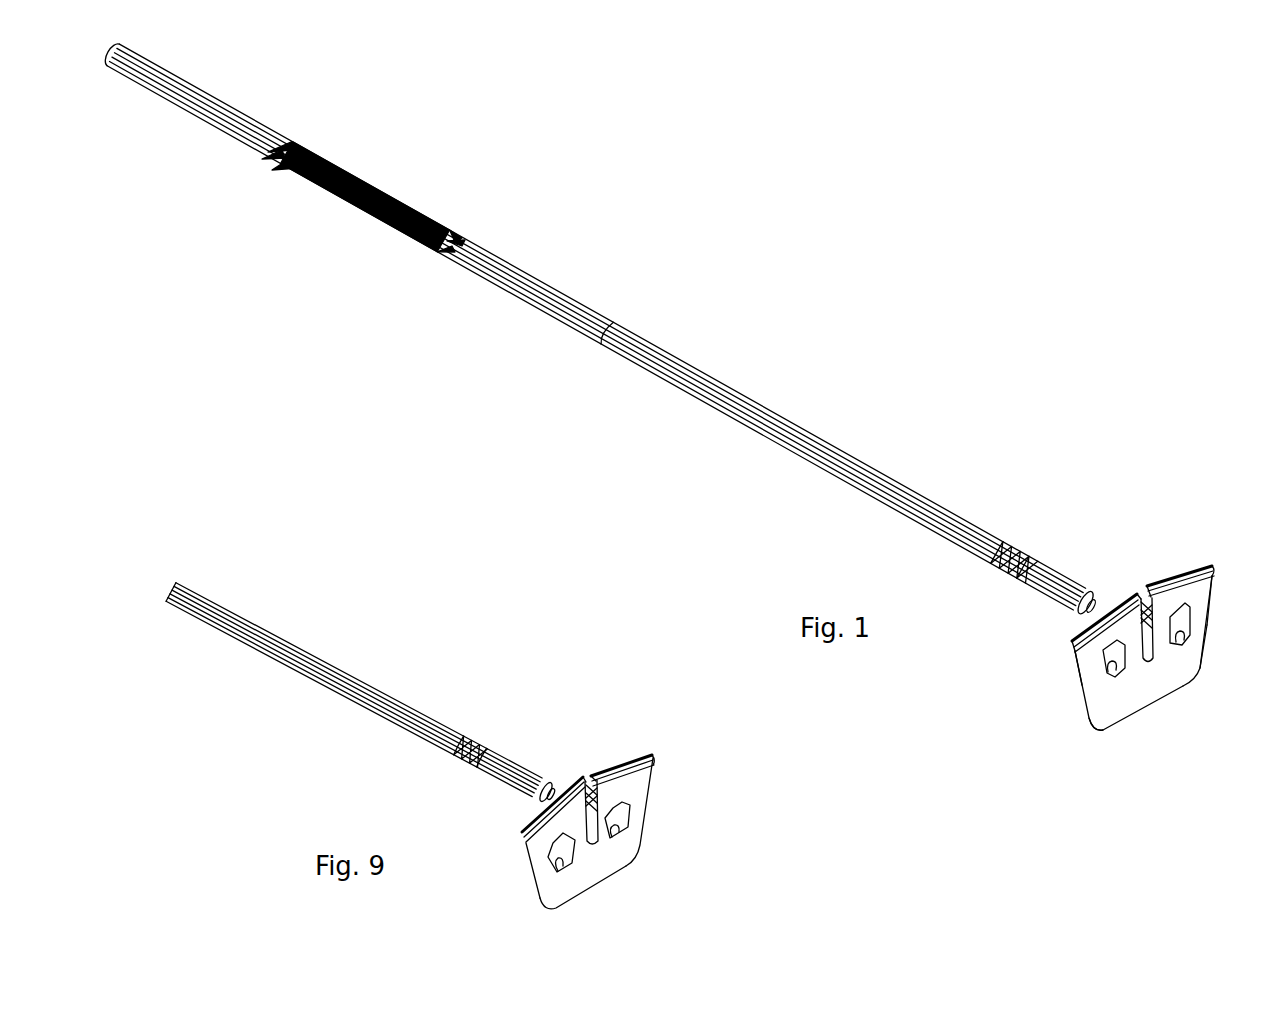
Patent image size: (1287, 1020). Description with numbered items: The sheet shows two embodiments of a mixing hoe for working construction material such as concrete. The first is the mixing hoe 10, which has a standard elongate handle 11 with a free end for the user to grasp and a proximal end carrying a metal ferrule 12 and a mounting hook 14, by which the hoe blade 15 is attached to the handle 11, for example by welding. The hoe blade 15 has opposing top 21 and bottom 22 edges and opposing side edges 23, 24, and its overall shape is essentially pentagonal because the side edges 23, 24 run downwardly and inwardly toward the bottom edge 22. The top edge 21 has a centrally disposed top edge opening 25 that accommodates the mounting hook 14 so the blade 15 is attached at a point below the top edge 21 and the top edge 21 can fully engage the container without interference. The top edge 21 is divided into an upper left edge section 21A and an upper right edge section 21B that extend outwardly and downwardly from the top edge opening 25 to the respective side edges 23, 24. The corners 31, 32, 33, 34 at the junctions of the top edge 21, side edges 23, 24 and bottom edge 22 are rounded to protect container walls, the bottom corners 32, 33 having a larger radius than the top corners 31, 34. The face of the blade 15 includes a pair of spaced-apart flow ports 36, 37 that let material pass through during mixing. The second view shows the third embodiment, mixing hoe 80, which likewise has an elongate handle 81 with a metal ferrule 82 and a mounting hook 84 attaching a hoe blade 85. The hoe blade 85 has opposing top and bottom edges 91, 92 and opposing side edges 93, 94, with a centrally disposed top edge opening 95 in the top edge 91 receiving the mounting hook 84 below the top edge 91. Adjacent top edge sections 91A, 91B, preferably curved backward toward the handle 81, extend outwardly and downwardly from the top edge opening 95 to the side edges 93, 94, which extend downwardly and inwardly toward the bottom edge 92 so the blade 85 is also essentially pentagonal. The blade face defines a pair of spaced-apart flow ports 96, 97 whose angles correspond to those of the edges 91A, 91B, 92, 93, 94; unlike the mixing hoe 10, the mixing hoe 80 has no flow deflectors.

In FIG. 1, the mixing hoe 10 is at (853, 270).
In FIG. 1, the handle 11 is at (487, 240).
In FIG. 1, the metal ferrule 12 is at (1030, 556).
In FIG. 1, the mounting hook 14 is at (1103, 604).
In FIG. 1, the hoe blade 15 is at (1105, 703).
In FIG. 1, the top edge 21 is at (1208, 575).
In FIG. 1, the upper left edge section 21A is at (1078, 632).
In FIG. 1, the upper right edge section 21B is at (1180, 570).
In FIG. 1, the bottom edge 22 is at (1178, 690).
In FIG. 1, the side edge 23 is at (1078, 672).
In FIG. 1, the side edge 24 is at (1205, 628).
In FIG. 1, the top edge opening 25 is at (1144, 592).
In FIG. 1, the top corner 31 is at (1080, 640).
In FIG. 1, the bottom corner 32 is at (1097, 735).
In FIG. 1, the bottom corner 33 is at (1200, 672).
In FIG. 1, the top corner 34 is at (1218, 568).
In FIG. 1, the flow port 36 is at (1113, 674).
In FIG. 1, the flow port 37 is at (1183, 633).
In FIG. 9, the mixing hoe 80 is at (472, 633).
In FIG. 9, the handle 81 is at (293, 650).
In FIG. 9, the metal ferrule 82 is at (500, 762).
In FIG. 9, the mounting hook 84 is at (560, 788).
In FIG. 9, the hoe blade 85 is at (608, 865).
In FIG. 9, the top edge 91 is at (645, 757).
In FIG. 9, the top edge section 91A is at (533, 830).
In FIG. 9, the top edge section 91B is at (620, 762).
In FIG. 9, the bottom edge 92 is at (593, 893).
In FIG. 9, the side edge 93 is at (533, 868).
In FIG. 9, the side edge 94 is at (652, 790).
In FIG. 9, the top edge opening 95 is at (588, 786).
In FIG. 9, the flow port 96 is at (548, 880).
In FIG. 9, the flow port 97 is at (620, 832).